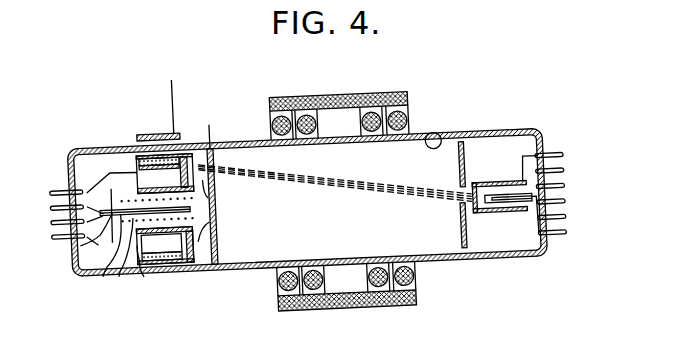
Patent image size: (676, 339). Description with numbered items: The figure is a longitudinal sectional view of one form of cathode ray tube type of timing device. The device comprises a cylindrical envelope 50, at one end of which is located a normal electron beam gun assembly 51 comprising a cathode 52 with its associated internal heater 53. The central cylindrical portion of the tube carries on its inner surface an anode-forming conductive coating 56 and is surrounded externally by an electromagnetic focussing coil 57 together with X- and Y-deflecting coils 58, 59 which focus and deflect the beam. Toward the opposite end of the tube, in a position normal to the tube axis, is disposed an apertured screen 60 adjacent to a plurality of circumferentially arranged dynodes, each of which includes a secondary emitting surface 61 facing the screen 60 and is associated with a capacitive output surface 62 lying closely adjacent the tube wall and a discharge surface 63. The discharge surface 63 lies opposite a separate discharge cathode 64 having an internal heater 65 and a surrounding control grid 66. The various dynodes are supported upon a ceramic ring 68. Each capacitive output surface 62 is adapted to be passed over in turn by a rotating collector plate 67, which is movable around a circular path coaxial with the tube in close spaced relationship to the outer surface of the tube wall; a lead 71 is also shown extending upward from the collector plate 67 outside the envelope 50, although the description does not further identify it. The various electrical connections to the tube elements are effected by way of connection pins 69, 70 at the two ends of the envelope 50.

The cylindrical envelope 50 is at (495, 138).
The electron beam gun assembly 51 is at (513, 185).
The cathode 52 is at (522, 194).
The internal heater 53 is at (527, 210).
The anode-forming conductive coating 56 is at (443, 142).
The electromagnetic focussing coil 57 is at (375, 96).
The X-deflecting coil 58 is at (366, 125).
The Y-deflecting coil 59 is at (395, 266).
The apertured screen 60 is at (216, 142).
The secondary emitting surface 61 is at (204, 235).
The capacitive output surface 62 is at (175, 254).
The discharge surface 63 is at (141, 270).
The discharge cathode 64 is at (100, 268).
The internal heater 65 is at (79, 236).
The control grid 66 is at (116, 268).
The rotating collector plate 67 is at (161, 127).
The ceramic ring 68 is at (141, 150).
The connection pins 69 is at (567, 181).
The connection pins 70 is at (50, 196).
The lead 71 is at (178, 90).